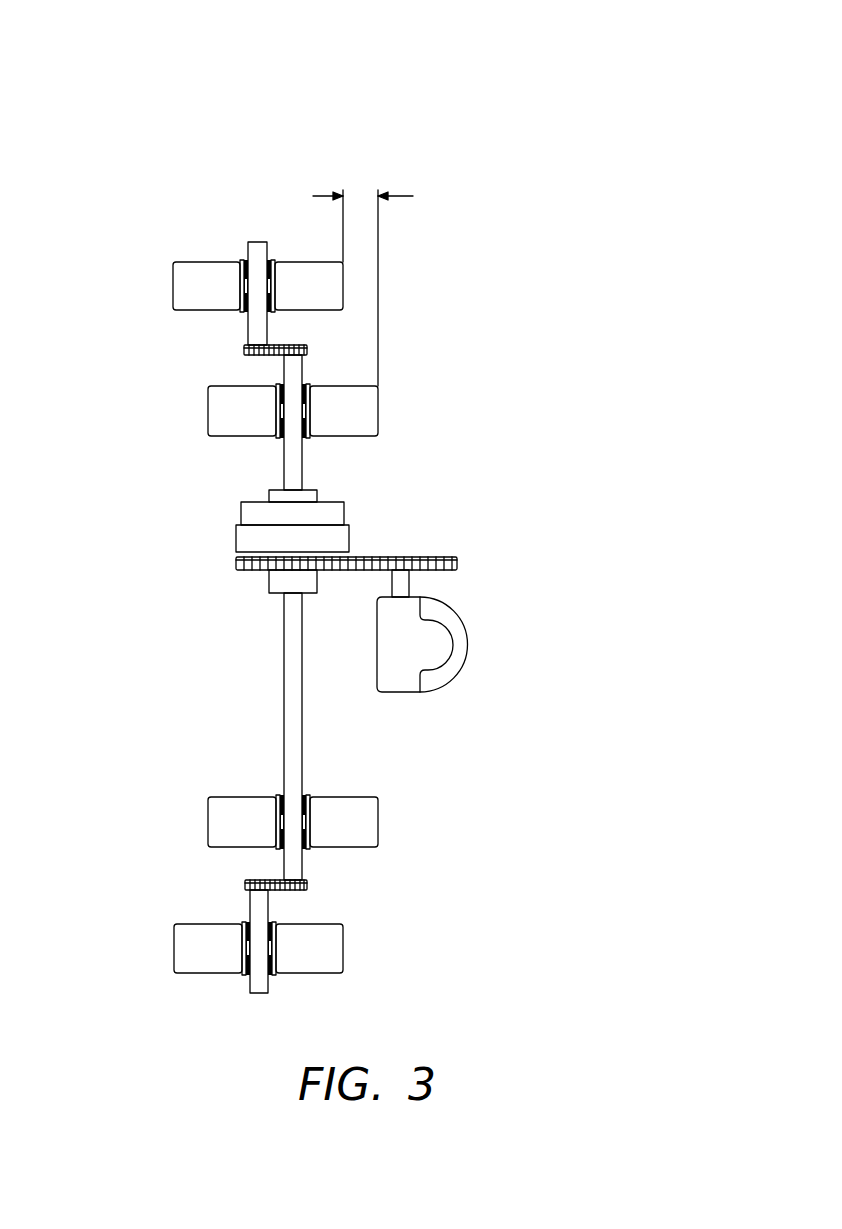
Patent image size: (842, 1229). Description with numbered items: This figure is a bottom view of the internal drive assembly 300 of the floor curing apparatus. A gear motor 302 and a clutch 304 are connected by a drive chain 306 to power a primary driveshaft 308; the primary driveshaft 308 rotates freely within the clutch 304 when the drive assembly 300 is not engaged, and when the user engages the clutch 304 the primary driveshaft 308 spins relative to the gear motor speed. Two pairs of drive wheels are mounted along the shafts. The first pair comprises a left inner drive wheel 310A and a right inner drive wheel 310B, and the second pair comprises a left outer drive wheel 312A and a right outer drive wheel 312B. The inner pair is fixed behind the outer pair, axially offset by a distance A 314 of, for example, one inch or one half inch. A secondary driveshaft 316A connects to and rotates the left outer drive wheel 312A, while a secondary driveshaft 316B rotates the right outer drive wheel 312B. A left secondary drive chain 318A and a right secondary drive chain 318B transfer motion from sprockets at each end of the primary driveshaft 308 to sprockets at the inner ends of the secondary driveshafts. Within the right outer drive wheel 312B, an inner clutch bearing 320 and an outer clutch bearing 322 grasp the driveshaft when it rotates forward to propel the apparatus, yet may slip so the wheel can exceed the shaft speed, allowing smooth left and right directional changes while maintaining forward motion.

The drive assembly 300 is at (129, 144).
The gear motor 302 is at (481, 642).
The clutch 304 is at (237, 537).
The drive chain 306 is at (457, 567).
The primary driveshaft 308 is at (284, 650).
The left inner drive wheel 310A is at (208, 407).
The right inner drive wheel 310B is at (208, 822).
The left outer drive wheel 312A is at (173, 286).
The right outer drive wheel 312B is at (173, 950).
The distance A 314 is at (361, 183).
The secondary driveshaft 316A is at (258, 242).
The secondary driveshaft 316B is at (259, 993).
The left secondary drive chain 318A is at (307, 350).
The right secondary drive chain 318B is at (307, 883).
The inner clutch bearing 320 is at (276, 935).
The outer clutch bearing 322 is at (276, 963).